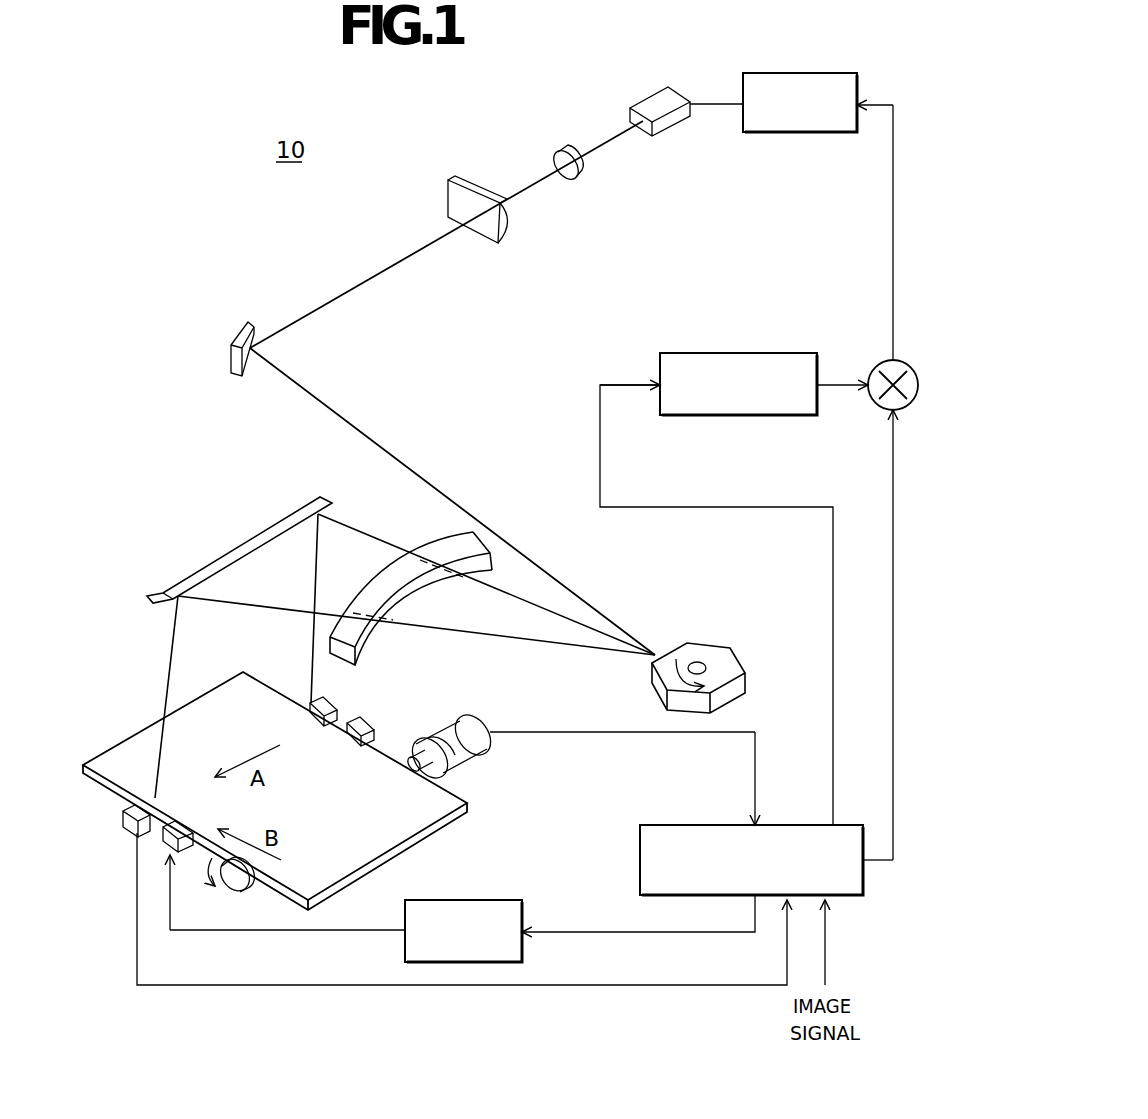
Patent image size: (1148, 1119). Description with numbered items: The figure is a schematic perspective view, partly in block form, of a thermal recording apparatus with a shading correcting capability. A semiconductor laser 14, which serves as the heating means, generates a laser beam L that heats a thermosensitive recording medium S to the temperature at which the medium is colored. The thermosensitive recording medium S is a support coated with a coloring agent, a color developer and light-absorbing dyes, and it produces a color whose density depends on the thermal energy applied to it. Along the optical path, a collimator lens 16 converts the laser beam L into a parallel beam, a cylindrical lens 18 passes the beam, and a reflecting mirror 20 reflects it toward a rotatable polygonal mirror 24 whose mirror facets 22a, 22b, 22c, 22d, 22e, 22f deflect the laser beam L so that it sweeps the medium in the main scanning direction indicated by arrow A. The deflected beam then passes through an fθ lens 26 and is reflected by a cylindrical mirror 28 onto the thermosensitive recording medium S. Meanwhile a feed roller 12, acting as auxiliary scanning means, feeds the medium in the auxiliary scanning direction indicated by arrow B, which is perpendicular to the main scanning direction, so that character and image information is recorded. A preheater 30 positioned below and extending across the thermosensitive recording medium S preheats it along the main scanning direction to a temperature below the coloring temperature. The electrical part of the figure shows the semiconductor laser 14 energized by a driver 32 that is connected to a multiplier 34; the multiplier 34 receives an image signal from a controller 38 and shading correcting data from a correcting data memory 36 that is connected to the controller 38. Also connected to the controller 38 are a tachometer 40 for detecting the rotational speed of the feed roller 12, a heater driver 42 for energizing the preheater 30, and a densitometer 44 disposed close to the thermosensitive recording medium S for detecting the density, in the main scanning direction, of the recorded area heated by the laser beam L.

The feed roller 12 is at (235, 888).
The semiconductor laser 14 is at (648, 95).
The collimator lens 16 is at (567, 142).
The cylindrical lens 18 is at (458, 176).
The reflecting mirror 20 is at (238, 327).
The mirror facet 22a is at (678, 707).
The mirror facet 22b is at (730, 698).
The mirror facet 22c is at (743, 667).
The mirror facet 22d is at (707, 645).
The mirror facet 22e is at (672, 650).
The mirror facet 22f is at (653, 687).
The polygonal mirror 24 is at (733, 641).
The fθ lens 26 is at (440, 542).
The cylindrical mirror 28 is at (235, 542).
The preheater 30 is at (362, 721).
The driver 32 is at (787, 72).
The multiplier 34 is at (880, 360).
The correcting data memory 36 is at (722, 352).
The controller 38 is at (673, 823).
The tachometer 40 is at (480, 726).
The heater driver 42 is at (508, 900).
The densitometer 44 is at (126, 821).
The thermosensitive recording medium S is at (137, 742).
The laser beam L is at (343, 295).